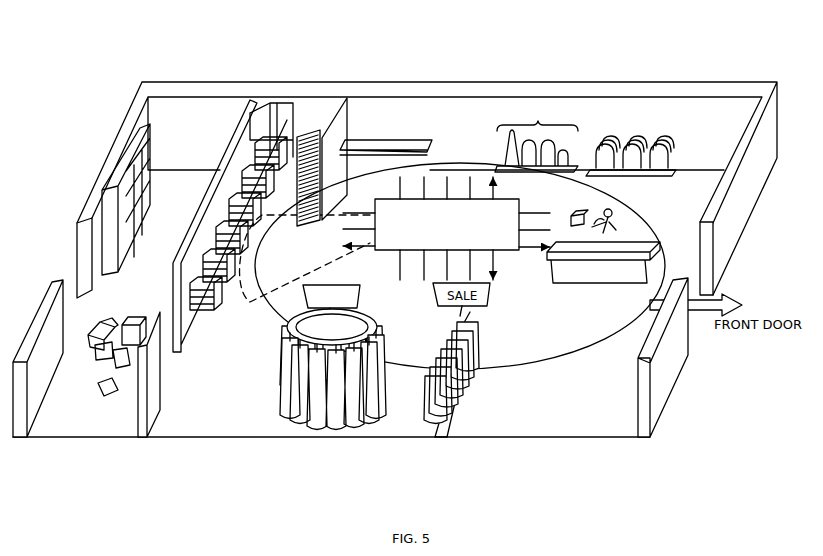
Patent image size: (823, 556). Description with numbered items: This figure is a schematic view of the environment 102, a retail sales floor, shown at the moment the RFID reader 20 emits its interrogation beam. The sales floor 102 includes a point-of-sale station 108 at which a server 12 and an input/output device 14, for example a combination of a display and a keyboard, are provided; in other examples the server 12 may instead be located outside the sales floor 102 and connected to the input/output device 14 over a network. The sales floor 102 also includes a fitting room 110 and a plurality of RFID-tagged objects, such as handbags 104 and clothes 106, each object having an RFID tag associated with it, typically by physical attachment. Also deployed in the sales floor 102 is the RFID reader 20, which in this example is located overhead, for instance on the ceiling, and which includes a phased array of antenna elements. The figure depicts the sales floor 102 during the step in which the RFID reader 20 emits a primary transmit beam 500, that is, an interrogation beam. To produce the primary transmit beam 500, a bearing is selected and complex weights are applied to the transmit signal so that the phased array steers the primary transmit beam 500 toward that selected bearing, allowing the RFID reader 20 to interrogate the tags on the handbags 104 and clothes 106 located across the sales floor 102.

The primary transmit beam 500 is at (271, 216).
The fitting room 110 is at (314, 110).
The handbags 104 is at (536, 136).
The server 12 is at (589, 208).
The input/output device 14 is at (576, 217).
The point-of-sale station 108 is at (632, 238).
The RFID reader 20 is at (396, 254).
The clothes 106 is at (276, 404).
The environment 102 is at (577, 432).